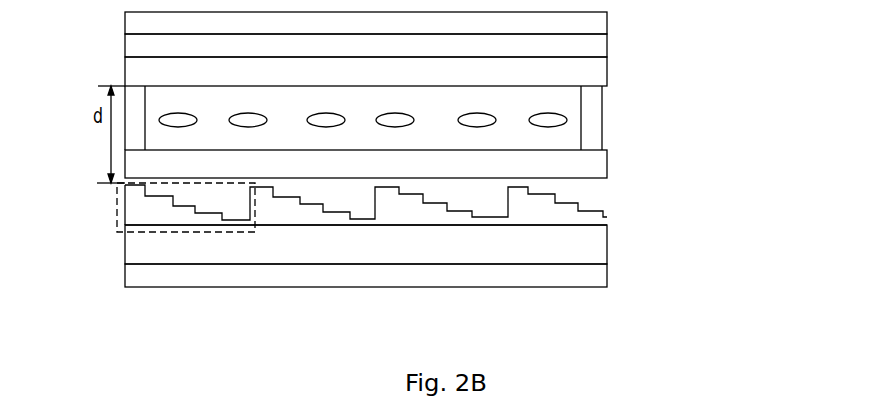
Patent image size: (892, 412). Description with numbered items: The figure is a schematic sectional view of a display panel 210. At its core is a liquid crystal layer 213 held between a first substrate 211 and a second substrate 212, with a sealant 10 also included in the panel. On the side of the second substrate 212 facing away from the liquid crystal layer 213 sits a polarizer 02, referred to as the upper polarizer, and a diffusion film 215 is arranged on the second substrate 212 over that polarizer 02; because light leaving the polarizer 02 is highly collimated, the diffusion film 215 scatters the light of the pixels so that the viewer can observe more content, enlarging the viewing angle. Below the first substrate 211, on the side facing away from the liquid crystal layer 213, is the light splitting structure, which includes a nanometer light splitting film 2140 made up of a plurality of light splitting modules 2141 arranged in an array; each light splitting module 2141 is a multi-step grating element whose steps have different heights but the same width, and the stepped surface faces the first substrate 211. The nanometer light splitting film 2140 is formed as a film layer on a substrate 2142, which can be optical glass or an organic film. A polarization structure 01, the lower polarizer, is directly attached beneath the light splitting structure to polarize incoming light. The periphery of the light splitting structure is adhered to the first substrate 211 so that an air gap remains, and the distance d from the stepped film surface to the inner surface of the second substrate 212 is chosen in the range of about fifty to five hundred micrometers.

The diffusion film 215 is at (607, 22).
The polarizer 02 is at (607, 43).
The second substrate 212 is at (607, 70).
The display panel 210 is at (471, 117).
The sealant 10 is at (602, 103).
The liquid crystal layer 213 is at (547, 123).
The first substrate 211 is at (607, 163).
The nanometer light splitting film 2140 is at (607, 214).
The light splitting module 2141 is at (117, 227).
The substrate 2142 is at (607, 253).
The polarization structure 01 is at (607, 279).